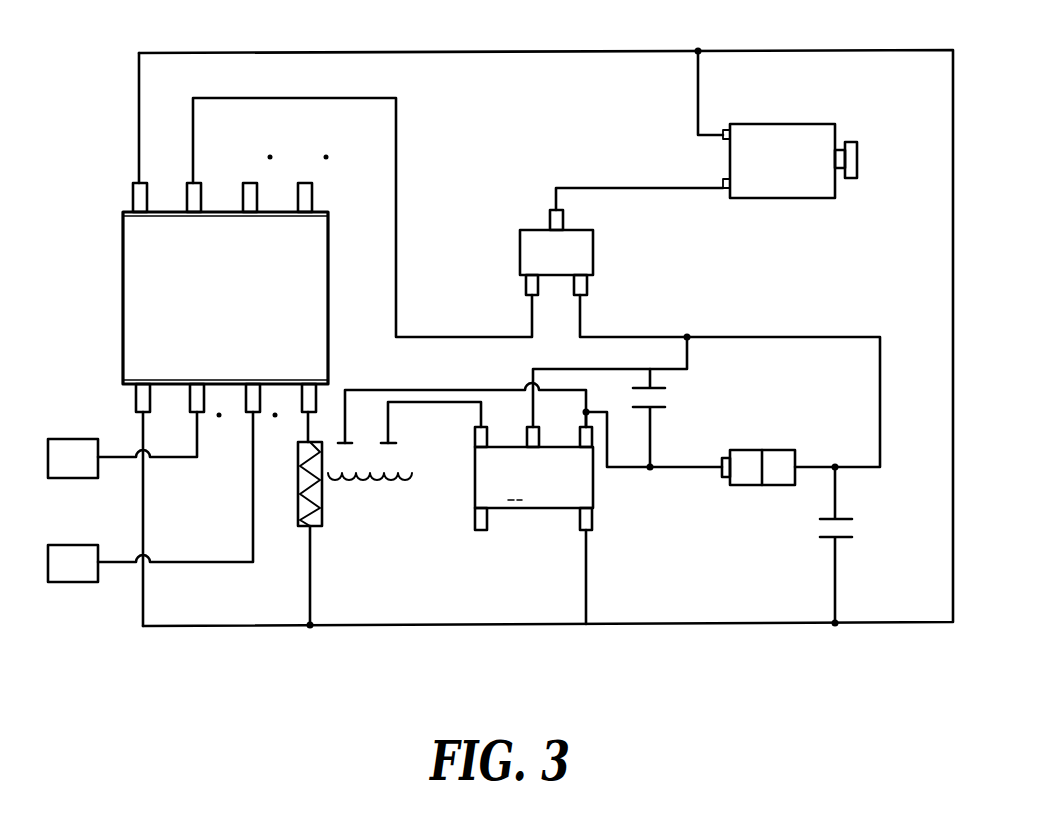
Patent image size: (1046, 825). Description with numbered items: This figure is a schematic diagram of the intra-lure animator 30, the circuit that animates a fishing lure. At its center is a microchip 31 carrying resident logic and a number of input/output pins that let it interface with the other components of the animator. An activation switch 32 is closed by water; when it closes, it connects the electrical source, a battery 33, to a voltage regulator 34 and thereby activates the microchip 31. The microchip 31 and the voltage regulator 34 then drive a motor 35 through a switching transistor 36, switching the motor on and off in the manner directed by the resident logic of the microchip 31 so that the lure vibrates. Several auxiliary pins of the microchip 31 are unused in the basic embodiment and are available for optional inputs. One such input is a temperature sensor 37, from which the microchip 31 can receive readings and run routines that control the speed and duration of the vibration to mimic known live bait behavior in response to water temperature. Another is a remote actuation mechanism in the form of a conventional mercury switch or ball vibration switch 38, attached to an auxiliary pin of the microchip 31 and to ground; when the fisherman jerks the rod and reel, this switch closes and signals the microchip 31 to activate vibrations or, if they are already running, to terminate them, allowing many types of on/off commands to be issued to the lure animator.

The intra-lure animator 30 is at (680, 645).
The microchip 31 is at (123, 278).
The activation switch 32 is at (365, 443).
The battery 33 is at (766, 485).
The voltage regulator 34 is at (510, 508).
The motor 35 is at (818, 124).
The switching transistor 36 is at (538, 230).
The temperature sensor 37 is at (73, 439).
The mercury switch or ball vibration switch 38 is at (65, 582).